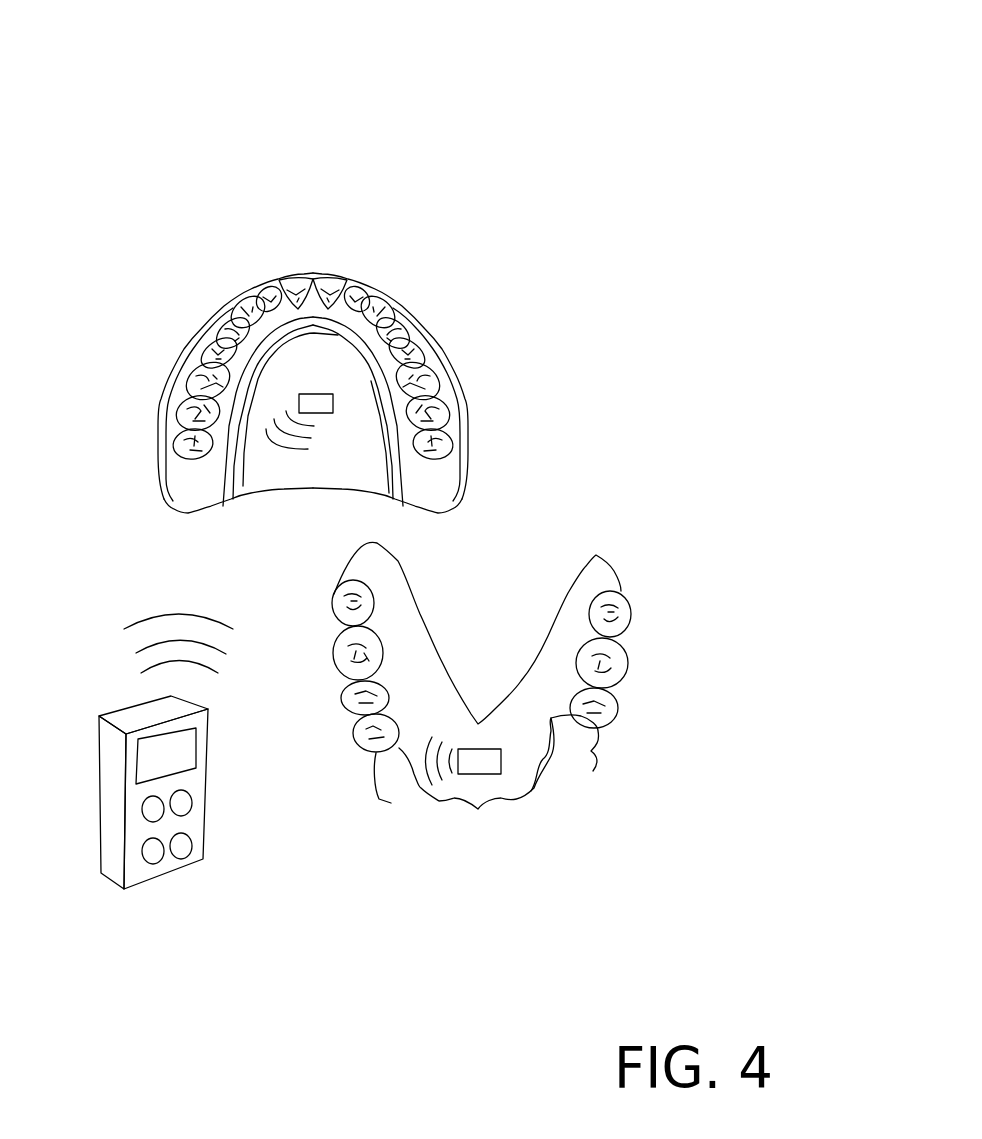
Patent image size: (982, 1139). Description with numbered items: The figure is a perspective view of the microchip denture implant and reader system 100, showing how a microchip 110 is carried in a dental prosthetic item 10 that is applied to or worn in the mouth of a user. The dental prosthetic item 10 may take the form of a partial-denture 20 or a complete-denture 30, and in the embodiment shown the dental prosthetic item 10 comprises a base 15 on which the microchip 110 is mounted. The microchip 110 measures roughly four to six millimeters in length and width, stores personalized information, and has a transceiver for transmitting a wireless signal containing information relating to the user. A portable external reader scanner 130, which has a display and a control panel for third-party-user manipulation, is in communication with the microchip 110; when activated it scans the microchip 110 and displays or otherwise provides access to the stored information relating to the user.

The microchip denture implant and reader system 100 is at (533, 100).
The dental prosthetic item 10 is at (555, 720).
The base 15 is at (312, 468).
The partial-denture 20 is at (608, 570).
The complete-denture 30 is at (443, 475).
The microchip 110 is at (323, 393).
The external reader scanner 130 is at (205, 820).